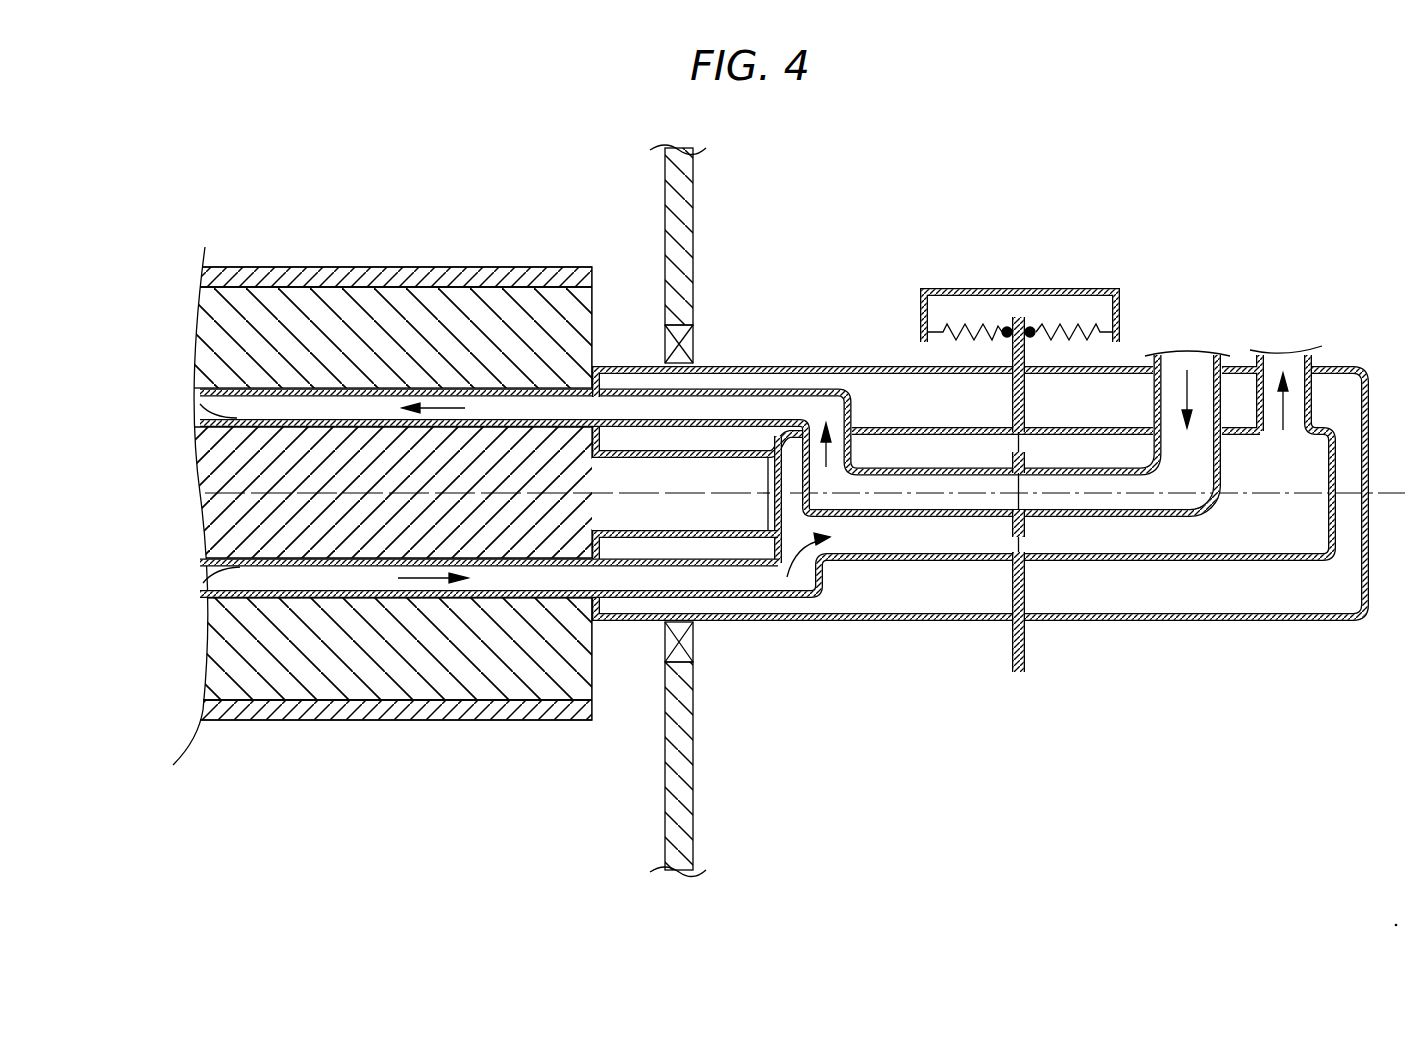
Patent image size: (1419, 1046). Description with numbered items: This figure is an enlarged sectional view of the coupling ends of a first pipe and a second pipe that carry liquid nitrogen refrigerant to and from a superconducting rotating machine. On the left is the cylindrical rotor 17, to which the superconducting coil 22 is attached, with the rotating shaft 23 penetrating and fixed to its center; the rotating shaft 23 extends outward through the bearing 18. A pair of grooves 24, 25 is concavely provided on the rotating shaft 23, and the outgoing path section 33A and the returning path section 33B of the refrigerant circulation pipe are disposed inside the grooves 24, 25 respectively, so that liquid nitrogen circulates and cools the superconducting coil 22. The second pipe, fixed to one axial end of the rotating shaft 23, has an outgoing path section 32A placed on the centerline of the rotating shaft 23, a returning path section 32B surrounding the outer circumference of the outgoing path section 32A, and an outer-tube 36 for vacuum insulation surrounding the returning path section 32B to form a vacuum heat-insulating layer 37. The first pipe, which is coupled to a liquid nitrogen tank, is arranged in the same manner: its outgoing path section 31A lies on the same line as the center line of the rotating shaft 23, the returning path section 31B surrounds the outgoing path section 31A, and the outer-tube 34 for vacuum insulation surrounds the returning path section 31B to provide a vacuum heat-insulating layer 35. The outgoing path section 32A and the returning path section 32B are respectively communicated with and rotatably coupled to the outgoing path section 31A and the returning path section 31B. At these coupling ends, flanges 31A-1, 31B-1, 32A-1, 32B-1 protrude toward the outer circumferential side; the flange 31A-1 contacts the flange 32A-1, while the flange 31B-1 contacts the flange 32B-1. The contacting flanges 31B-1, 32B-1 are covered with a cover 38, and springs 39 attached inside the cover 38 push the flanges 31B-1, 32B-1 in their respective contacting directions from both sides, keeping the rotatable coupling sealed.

The rotor 17 is at (237, 322).
The bearing 18 is at (665, 347).
The superconducting coil 22 is at (268, 270).
The rotating shaft 23 is at (290, 543).
The groove 24 is at (227, 417).
The groove 25 is at (228, 574).
The outgoing path section of first pipe 31A is at (1085, 523).
The flange 31A-1 is at (1030, 527).
The returning path section of first pipe 31B is at (1140, 563).
The flange 31B-1 is at (1027, 351).
The outgoing path section of second pipe 32A is at (885, 465).
The flange 32A-1 is at (1012, 522).
The returning path section of second pipe 32B is at (952, 520).
The flange 32B-1 is at (1013, 351).
The outgoing path section of refrigerant circulation pipe 33A is at (367, 389).
The returning path section of refrigerant circulation pipe 33B is at (352, 598).
The outer-tube 34 is at (1307, 627).
The vacuum heat-insulating layer 35 is at (1220, 597).
The outer-tube 36 is at (742, 364).
The vacuum heat-insulating layer 37 is at (850, 400).
The cover 38 is at (1118, 300).
The springs 39 is at (1072, 328).